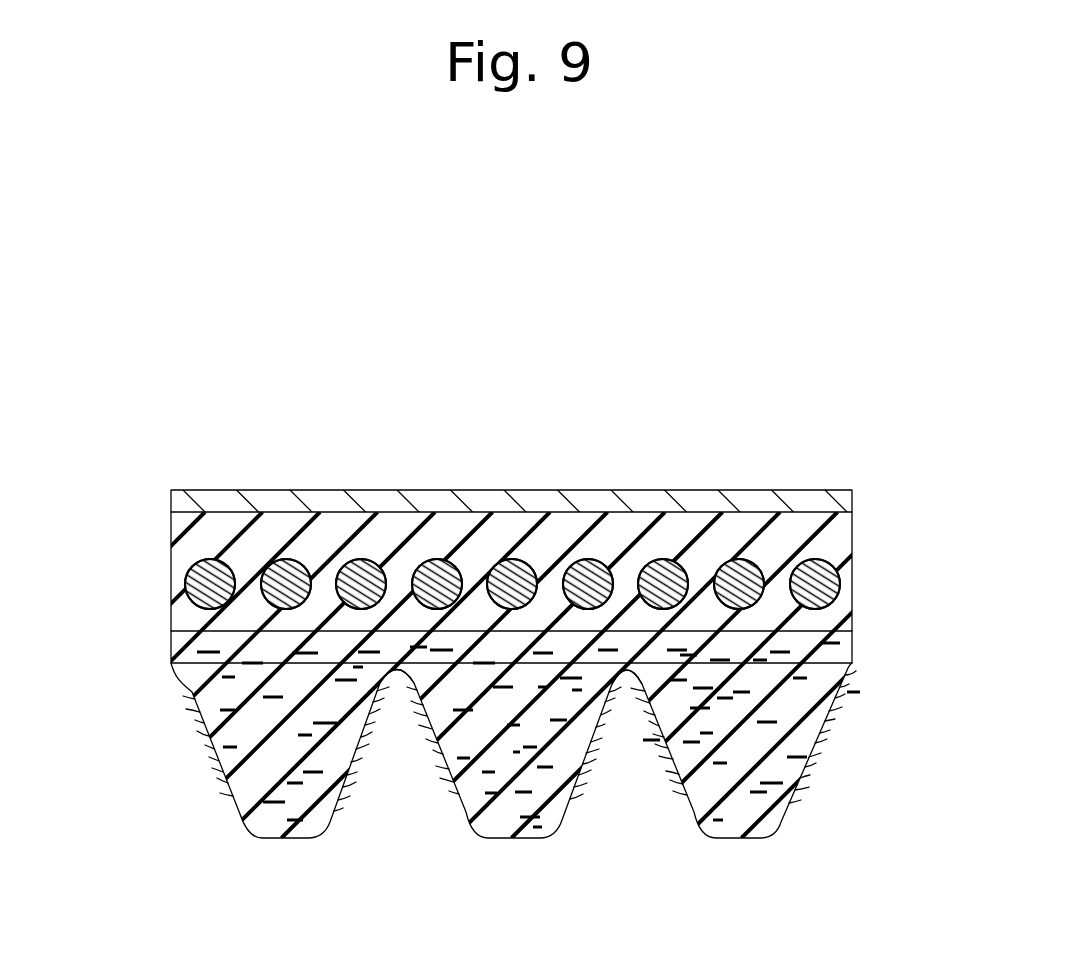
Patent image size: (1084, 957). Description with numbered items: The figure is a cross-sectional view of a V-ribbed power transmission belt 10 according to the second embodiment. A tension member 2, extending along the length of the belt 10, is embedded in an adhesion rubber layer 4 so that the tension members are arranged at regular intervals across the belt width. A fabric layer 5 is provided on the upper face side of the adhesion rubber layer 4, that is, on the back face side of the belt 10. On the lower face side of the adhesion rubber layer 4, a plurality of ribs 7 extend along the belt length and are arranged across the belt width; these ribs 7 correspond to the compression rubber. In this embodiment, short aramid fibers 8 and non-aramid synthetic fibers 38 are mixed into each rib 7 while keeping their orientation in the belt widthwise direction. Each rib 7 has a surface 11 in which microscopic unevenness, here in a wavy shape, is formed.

The power transmission belt 10 is at (532, 356).
The fabric layer 5 is at (853, 495).
The adhesion rubber layer 4 is at (853, 528).
The tension member 2 is at (840, 581).
The short aramid fibers 8 is at (780, 700).
The rib 7 is at (285, 840).
The non-aramid synthetic fibers 38 is at (194, 699).
The surface 11 is at (667, 773).